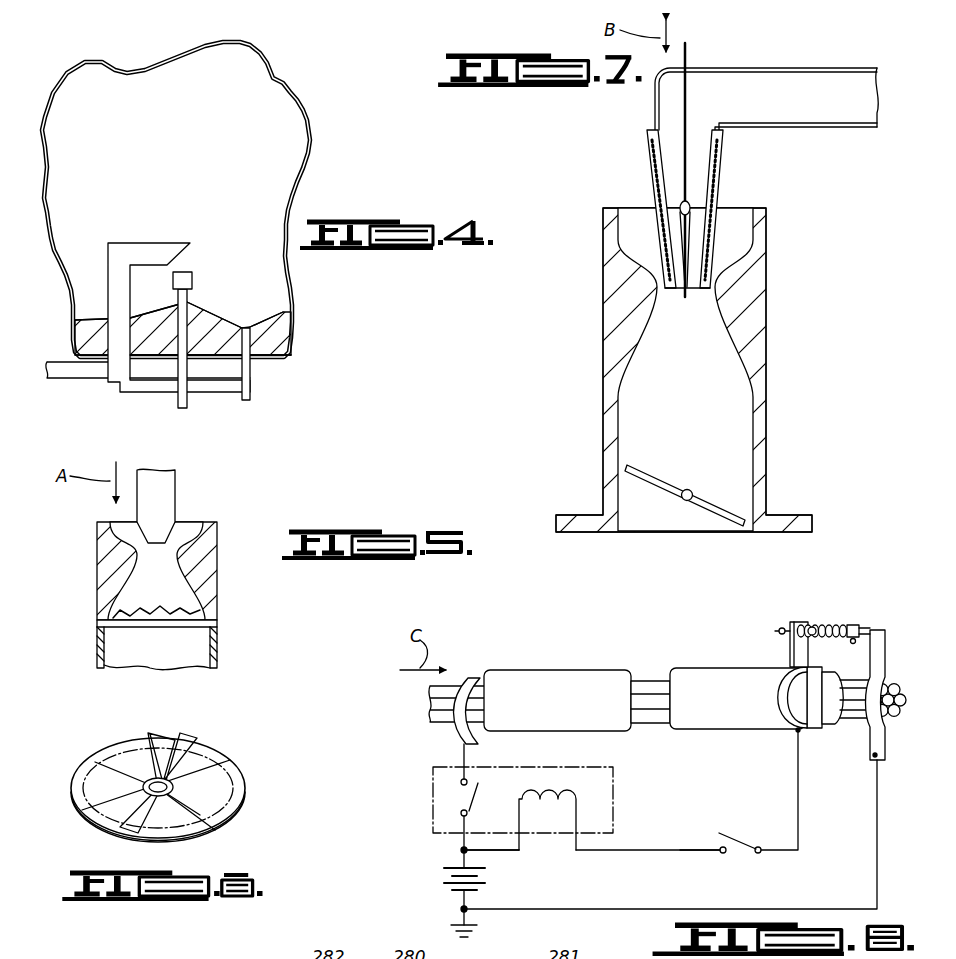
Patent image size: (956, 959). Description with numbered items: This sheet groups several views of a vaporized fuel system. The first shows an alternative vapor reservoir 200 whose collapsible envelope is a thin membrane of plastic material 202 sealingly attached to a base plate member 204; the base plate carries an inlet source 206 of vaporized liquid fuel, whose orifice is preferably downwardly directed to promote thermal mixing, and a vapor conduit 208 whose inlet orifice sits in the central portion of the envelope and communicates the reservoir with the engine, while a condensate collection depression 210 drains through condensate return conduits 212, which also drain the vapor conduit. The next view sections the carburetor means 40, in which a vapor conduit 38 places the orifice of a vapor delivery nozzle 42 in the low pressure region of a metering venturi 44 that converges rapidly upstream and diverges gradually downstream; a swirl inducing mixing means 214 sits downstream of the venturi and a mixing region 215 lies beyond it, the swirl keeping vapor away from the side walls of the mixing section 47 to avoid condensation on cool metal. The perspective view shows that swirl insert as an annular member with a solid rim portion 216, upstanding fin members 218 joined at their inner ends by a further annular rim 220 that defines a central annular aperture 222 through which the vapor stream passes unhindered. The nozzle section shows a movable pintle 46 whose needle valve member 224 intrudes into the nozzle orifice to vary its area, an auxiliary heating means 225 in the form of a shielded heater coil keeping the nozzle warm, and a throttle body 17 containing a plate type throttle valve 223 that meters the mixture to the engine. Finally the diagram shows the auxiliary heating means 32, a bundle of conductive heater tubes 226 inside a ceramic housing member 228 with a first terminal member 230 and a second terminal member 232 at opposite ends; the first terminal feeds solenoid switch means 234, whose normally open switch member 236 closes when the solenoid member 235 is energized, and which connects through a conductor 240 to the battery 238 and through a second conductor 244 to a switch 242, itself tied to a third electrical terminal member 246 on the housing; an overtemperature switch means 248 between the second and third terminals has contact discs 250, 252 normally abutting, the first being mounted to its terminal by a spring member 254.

In FIG. 4, the vapor reservoir 200 is at (194, 188).
In FIG. 4, the thin membrane of plastic material 202 is at (205, 44).
In FIG. 4, the base plate member 204 is at (286, 358).
In FIG. 4, the inlet source of vaporized liquid fuel 206 is at (178, 400).
In FIG. 4, the vapor conduit 208 is at (62, 380).
In FIG. 4, the condensate collection depression 210 is at (215, 302).
In FIG. 4, the condensate return conduit 212 is at (250, 400).
In FIG. 5, the vapor conduit 38 is at (175, 500).
In FIG. 7, the vapor conduit 38 is at (850, 68).
In FIG. 5, the carburetor means 40 is at (146, 569).
In FIG. 7, the carburetor means 40 is at (697, 370).
In FIG. 5, the vapor delivery nozzle 42 is at (154, 569).
In FIG. 7, the vapor delivery nozzle 42 is at (722, 369).
In FIG. 5, the metering venturi 44 is at (118, 558).
In FIG. 7, the metering venturi 44 is at (745, 290).
In FIG. 5, the mixing section 47 is at (97, 641).
In FIG. 5, the swirl inducing mixing means 214 is at (210, 627).
In FIG. 6, the swirl inducing mixing means 214 is at (166, 769).
In FIG. 5, the mixing region 215 is at (142, 653).
In FIG. 6, the solid rim portion 216 is at (243, 796).
In FIG. 6, the fin members 218 is at (170, 742).
In FIG. 6, the annular rim 220 is at (147, 780).
In FIG. 6, the annular aperture 222 is at (82, 810).
In FIG. 7, the movable pintle 46 is at (690, 53).
In FIG. 7, the needle valve member 224 is at (712, 222).
In FIG. 7, the auxiliary heating means 225 is at (648, 182).
In FIG. 7, the throttle valve 223 is at (658, 470).
In FIG. 7, the throttle body 17 is at (668, 380).
In FIG. 8, the auxiliary heating means 32 is at (667, 681).
In FIG. 8, the heater tubes 226 is at (650, 681).
In FIG. 8, the ceramic housing member 228 is at (556, 670).
In FIG. 8, the first terminal member 230 is at (466, 678).
In FIG. 8, the second terminal member 232 is at (885, 630).
In FIG. 8, the solenoid switch means 234 is at (618, 782).
In FIG. 8, the solenoid member 235 is at (542, 795).
In FIG. 8, the switch member 236 is at (478, 793).
In FIG. 8, the battery 238 is at (440, 900).
In FIG. 8, the conductor 240 is at (510, 852).
In FIG. 8, the switch 242 is at (742, 836).
In FIG. 8, the second conductor 244 is at (670, 850).
In FIG. 8, the third electrical terminal member 246 is at (800, 620).
In FIG. 8, the overtemperature switch means 248 is at (850, 592).
In FIG. 8, the contact disc 250 is at (860, 625).
In FIG. 8, the contact disc 252 is at (856, 642).
In FIG. 8, the spring member 254 is at (812, 626).